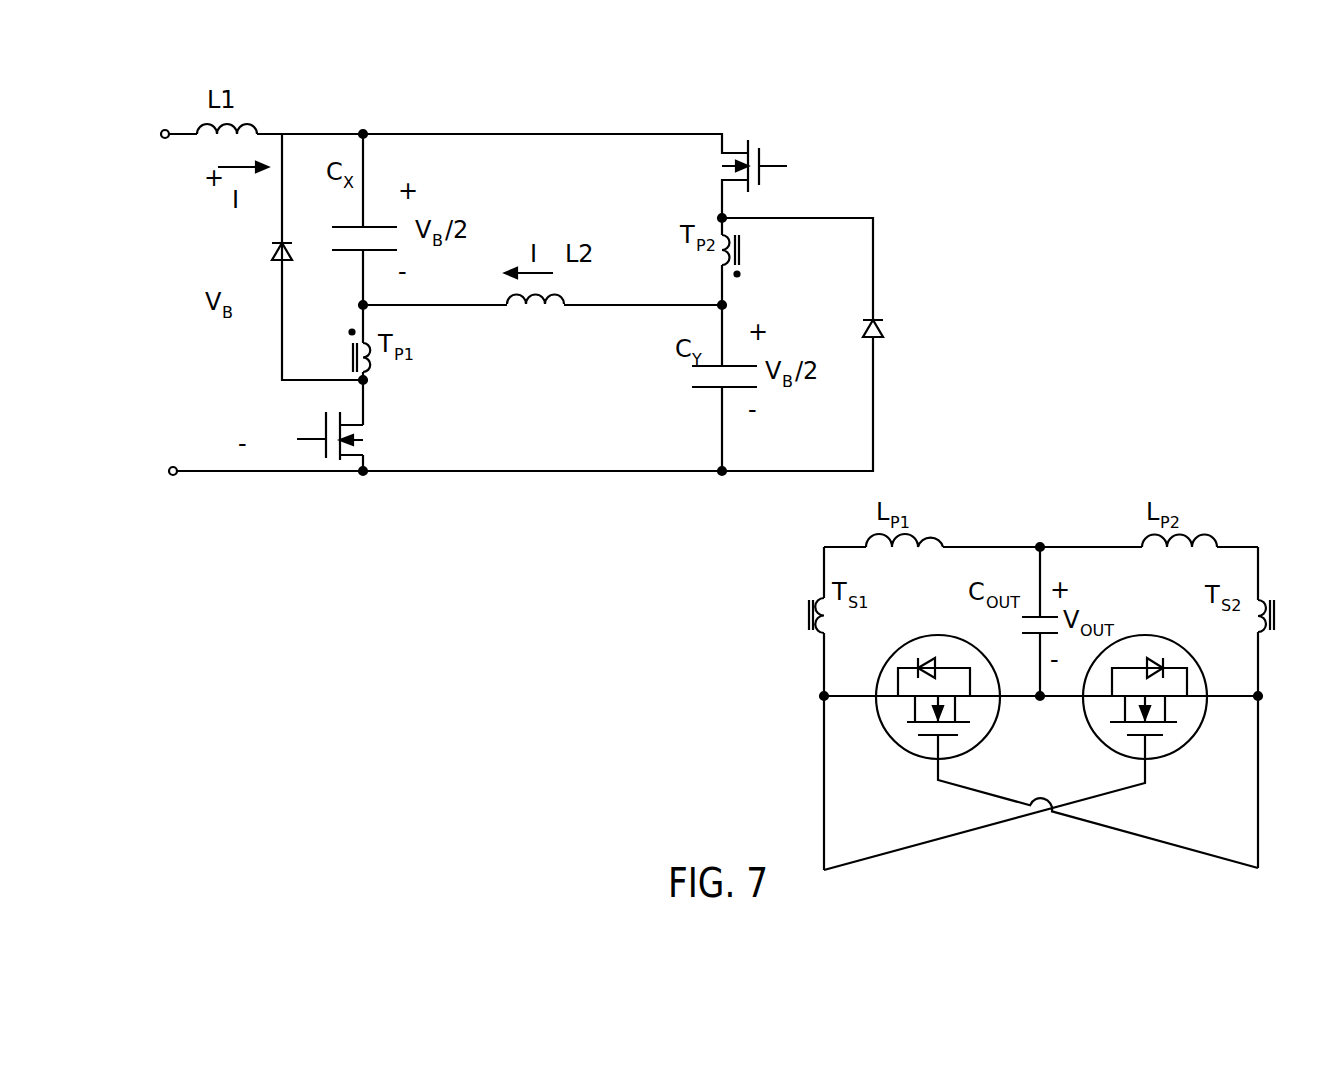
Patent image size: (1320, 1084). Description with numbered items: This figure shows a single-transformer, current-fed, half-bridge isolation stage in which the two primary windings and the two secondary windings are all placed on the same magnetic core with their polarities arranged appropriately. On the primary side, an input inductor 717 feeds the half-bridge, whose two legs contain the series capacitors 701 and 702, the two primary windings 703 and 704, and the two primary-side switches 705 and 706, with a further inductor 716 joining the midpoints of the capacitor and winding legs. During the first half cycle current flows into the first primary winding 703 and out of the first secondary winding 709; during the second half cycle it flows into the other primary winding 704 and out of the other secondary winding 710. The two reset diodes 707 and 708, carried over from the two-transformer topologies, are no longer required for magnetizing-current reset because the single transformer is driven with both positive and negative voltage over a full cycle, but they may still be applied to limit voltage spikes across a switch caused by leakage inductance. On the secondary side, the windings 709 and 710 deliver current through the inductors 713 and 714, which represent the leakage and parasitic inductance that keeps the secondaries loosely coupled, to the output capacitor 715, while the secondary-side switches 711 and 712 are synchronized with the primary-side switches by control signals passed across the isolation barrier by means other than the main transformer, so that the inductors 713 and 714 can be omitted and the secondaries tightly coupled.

The capacitor CX 701 is at (343, 226).
The capacitor CY 702 is at (703, 388).
The primary winding 703 is at (352, 352).
The primary winding 704 is at (724, 252).
The switching transistor 705 is at (326, 437).
The switching transistor 706 is at (763, 176).
The reset diode 707 is at (287, 254).
The reset diode 708 is at (877, 337).
The secondary winding 709 is at (822, 618).
The secondary winding 710 is at (1262, 616).
The synchronous rectifier 711 is at (896, 752).
The synchronous rectifier 712 is at (1177, 752).
The inductor 713 is at (930, 538).
The inductor 714 is at (1211, 538).
The output capacitor COUT 715 is at (1032, 634).
The inductor L2 716 is at (528, 310).
The inductor L1 717 is at (256, 126).